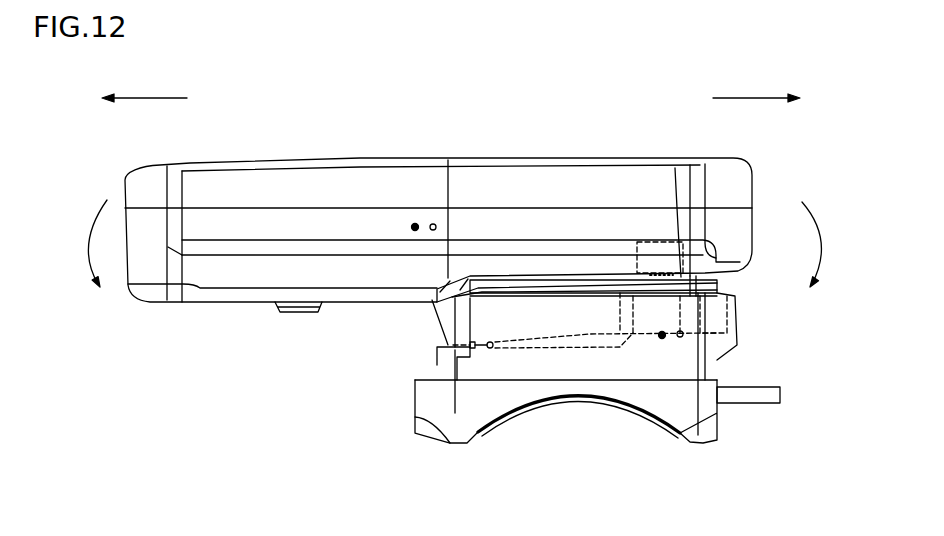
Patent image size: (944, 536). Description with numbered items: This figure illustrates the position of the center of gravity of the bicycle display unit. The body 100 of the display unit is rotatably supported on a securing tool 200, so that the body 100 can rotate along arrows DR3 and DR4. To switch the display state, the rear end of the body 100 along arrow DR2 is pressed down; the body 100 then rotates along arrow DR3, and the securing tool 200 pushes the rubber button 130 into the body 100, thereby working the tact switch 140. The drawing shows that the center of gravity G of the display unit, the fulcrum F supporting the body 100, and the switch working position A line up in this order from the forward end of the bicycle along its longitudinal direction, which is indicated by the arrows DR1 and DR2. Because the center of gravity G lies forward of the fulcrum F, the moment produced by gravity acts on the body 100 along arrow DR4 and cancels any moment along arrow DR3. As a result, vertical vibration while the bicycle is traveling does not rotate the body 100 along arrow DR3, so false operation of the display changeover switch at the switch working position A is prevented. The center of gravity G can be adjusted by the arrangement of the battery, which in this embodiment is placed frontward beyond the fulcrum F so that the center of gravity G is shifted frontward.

The body 100 is at (249, 139).
The rubber button 130 is at (700, 299).
The tact switch 140 is at (676, 262).
The securing tool 200 is at (621, 423).
The center of gravity G is at (434, 224).
The fulcrum F is at (494, 352).
The switch working position A is at (679, 342).
The arrow DR1 is at (149, 97).
The arrow DR2 is at (750, 97).
The arrow DR3 is at (830, 240).
The arrow DR4 is at (80, 240).